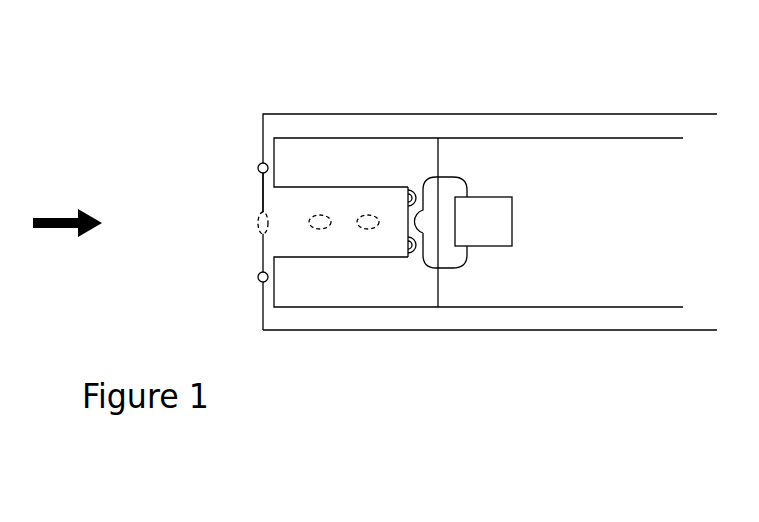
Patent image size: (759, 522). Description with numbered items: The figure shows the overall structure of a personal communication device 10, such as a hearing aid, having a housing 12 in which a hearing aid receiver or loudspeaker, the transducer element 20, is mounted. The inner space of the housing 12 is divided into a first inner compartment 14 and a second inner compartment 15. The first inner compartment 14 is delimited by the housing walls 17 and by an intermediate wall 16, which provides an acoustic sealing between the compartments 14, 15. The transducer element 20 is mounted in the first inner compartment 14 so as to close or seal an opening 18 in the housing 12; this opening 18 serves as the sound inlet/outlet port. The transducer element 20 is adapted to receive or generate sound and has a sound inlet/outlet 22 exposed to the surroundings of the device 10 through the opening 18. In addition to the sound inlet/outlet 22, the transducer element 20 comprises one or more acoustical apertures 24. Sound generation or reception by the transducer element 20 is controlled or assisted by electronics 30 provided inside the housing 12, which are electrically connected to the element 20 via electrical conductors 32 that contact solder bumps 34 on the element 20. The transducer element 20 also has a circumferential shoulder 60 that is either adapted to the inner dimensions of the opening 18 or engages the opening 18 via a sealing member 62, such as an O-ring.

The personal communication device 10 is at (650, 103).
The housing 12 is at (612, 318).
The first inner compartment 14 is at (341, 162).
The second inner compartment 15 is at (558, 158).
The intermediate wall 16 is at (446, 160).
The housing walls 17 is at (284, 309).
The opening 18 is at (249, 163).
The transducer element 20 is at (327, 195).
The sound inlet/outlet 22 is at (249, 223).
The acoustical apertures 24 is at (320, 236).
The electronics 30 is at (523, 222).
The electrical conductors 32 is at (467, 162).
The solder bumps 34 is at (420, 172).
The circumferential shoulder 60 is at (249, 188).
The sealing member 62 is at (249, 282).